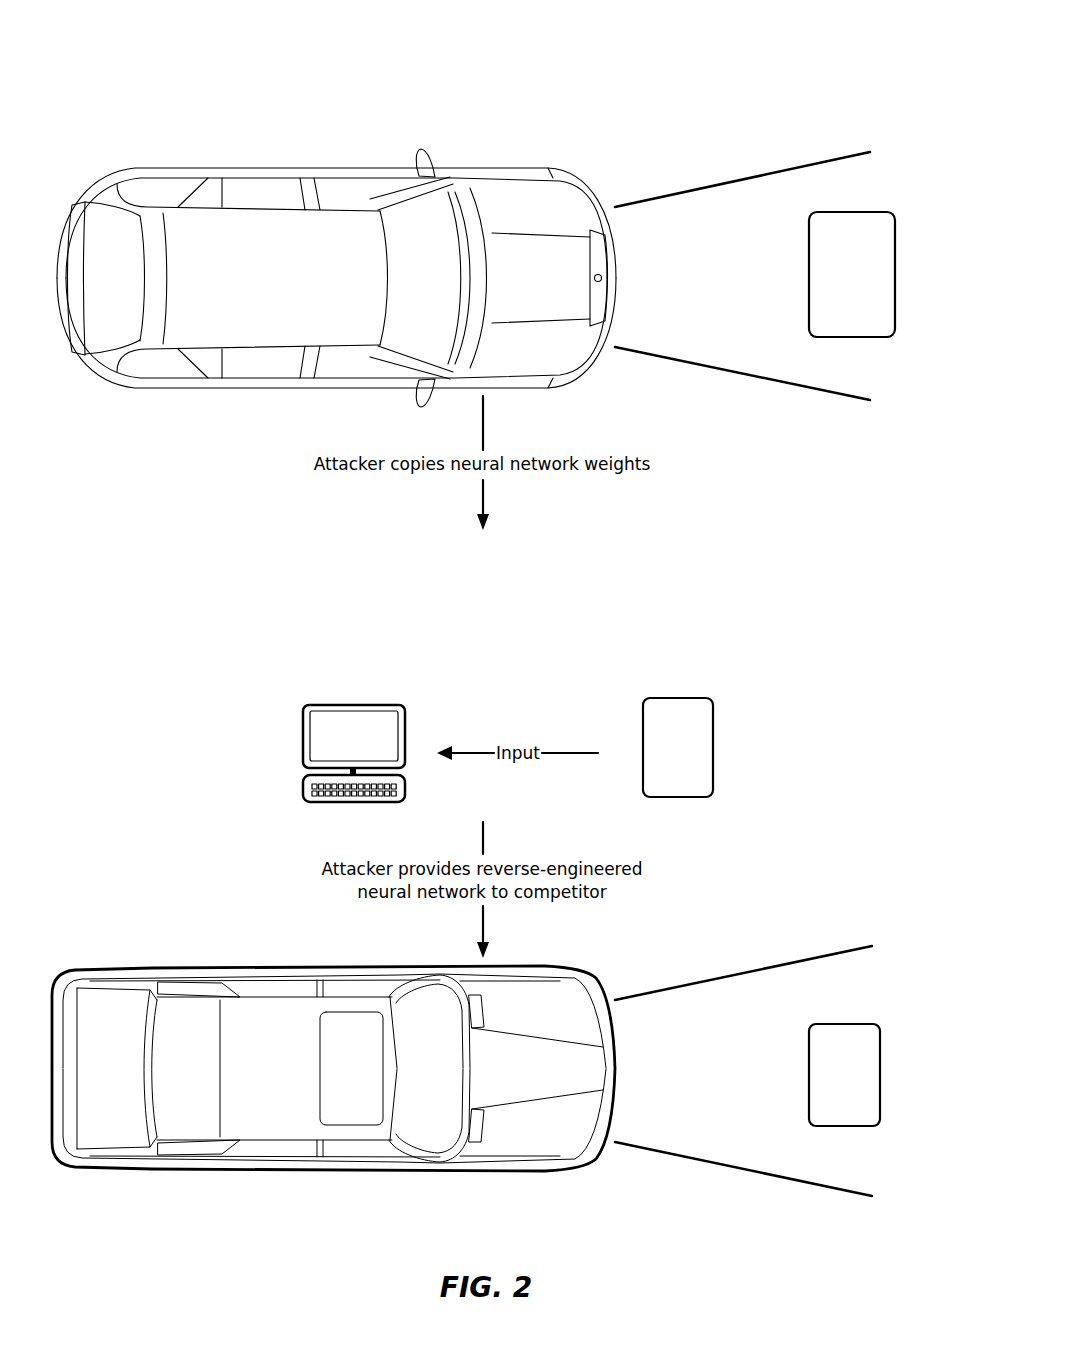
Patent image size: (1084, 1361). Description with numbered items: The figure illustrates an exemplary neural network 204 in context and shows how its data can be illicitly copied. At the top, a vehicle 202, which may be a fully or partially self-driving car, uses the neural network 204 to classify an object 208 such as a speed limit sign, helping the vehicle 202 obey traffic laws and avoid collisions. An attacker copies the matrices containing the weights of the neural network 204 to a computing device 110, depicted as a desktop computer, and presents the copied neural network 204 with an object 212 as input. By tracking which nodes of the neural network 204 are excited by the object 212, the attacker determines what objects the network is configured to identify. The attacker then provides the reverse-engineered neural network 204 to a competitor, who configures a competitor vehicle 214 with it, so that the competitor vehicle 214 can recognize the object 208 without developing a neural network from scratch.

The vehicle 202 is at (190, 165).
The neural network 204 is at (593, 1188).
The object 208 is at (885, 1013).
The computing device 110 is at (305, 701).
The object 212 is at (705, 695).
The competitor vehicle 214 is at (172, 963).